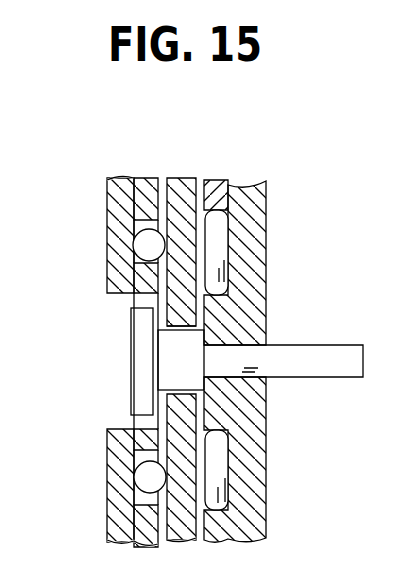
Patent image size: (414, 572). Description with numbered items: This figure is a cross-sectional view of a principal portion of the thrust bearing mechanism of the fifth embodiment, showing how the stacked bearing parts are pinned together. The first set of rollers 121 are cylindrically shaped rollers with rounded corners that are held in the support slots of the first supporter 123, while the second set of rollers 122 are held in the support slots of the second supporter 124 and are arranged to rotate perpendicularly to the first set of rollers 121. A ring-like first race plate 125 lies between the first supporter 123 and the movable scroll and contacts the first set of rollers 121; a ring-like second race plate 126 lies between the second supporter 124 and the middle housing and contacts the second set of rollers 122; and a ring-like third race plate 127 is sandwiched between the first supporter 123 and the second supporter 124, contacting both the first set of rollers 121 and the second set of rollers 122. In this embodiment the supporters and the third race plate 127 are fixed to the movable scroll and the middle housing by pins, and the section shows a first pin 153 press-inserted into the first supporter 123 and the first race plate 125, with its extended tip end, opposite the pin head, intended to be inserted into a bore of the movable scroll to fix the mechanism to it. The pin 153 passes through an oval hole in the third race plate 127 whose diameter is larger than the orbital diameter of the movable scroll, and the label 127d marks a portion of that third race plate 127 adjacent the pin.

The first set of rollers 121 is at (223, 456).
The second set of rollers 122 is at (143, 248).
The first supporter 123 is at (220, 180).
The second supporter 124 is at (140, 180).
The first race plate 125 is at (262, 204).
The second race plate 126 is at (121, 180).
The third race plate 127 is at (182, 180).
The end face of intermediate member 127d is at (200, 324).
The first pin 153 is at (140, 360).